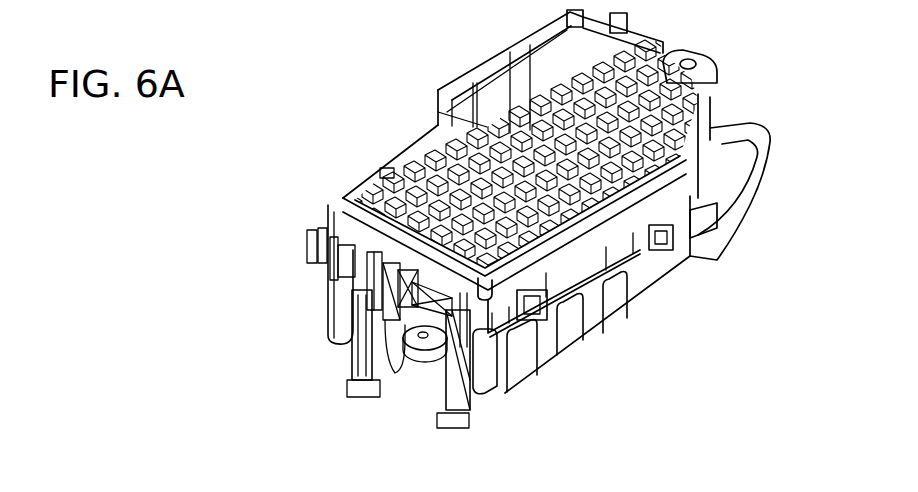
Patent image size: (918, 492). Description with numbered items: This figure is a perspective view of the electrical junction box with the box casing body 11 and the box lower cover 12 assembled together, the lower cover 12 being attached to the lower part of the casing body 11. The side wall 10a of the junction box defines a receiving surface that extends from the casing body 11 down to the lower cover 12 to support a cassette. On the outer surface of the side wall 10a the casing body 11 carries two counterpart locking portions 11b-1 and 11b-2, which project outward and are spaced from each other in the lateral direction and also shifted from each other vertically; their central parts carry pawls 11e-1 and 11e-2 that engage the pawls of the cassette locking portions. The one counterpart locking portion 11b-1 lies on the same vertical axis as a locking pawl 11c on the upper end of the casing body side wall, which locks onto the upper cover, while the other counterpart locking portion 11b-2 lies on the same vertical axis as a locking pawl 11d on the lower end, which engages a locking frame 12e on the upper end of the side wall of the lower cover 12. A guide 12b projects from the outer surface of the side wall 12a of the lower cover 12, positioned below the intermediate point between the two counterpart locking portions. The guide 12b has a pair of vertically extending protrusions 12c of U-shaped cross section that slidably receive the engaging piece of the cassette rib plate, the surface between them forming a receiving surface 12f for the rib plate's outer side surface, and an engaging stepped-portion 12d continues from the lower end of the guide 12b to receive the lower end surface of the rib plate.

The box casing body 11 is at (713, 117).
The box lower cover 12 is at (676, 244).
The side wall 10a is at (336, 313).
The counterpart locking portion 11b-1 is at (312, 248).
The counterpart locking portion 11b-2 is at (395, 373).
The locking pawl 11c is at (390, 175).
The locking pawl 11d is at (538, 322).
The pawl 11e-1 is at (312, 230).
The pawl 11e-2 is at (470, 345).
The side wall 12a is at (350, 292).
The guide 12b is at (367, 297).
The protrusions 12c is at (350, 307).
The engaging stepped-portion 12d is at (365, 305).
The locking frame 12e is at (582, 348).
The receiving surface 12f is at (372, 303).